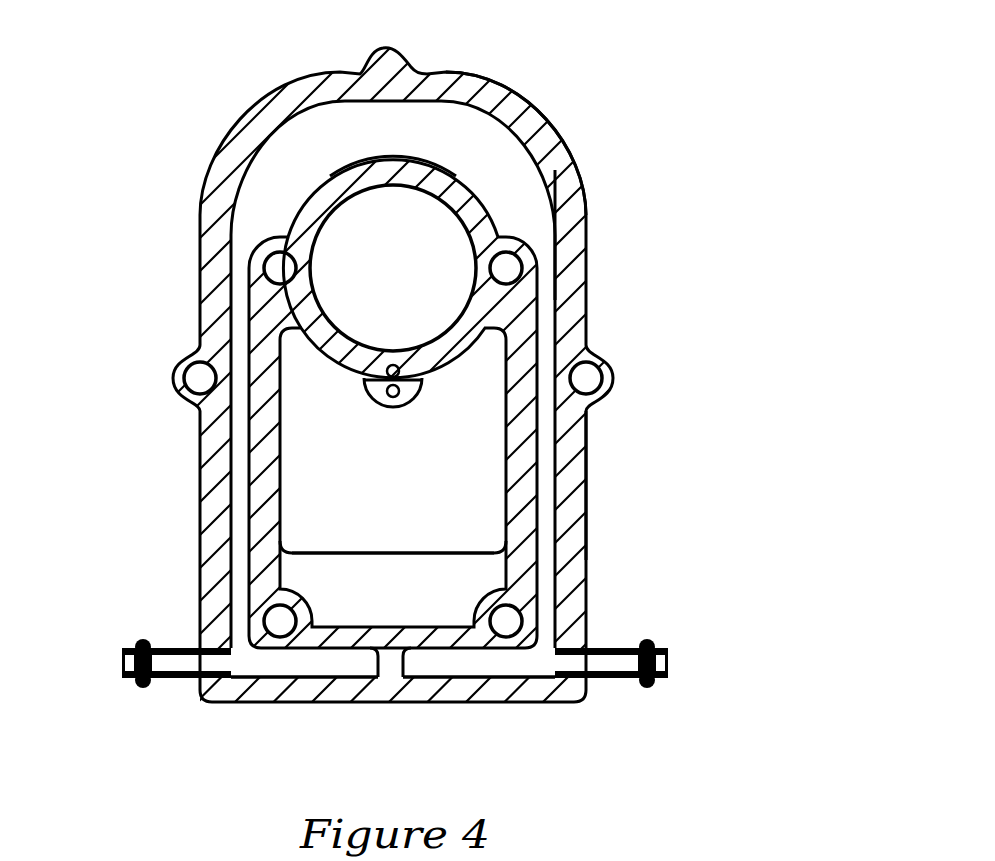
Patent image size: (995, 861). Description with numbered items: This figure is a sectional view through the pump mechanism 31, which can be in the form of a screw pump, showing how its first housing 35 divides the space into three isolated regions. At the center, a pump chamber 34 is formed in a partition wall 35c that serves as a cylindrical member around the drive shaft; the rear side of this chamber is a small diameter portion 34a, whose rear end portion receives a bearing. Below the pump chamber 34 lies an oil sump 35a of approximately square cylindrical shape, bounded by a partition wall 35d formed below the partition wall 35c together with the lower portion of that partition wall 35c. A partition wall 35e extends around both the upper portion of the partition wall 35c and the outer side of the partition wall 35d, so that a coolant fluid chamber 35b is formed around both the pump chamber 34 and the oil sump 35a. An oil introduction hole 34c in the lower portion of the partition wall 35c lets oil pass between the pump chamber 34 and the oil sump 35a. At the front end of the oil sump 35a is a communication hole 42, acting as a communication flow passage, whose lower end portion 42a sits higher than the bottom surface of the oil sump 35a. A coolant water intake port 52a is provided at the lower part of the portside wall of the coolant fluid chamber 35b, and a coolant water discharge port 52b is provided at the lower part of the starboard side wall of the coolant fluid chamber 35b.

The pump mechanism 31 is at (497, 430).
The pump chamber 34 is at (330, 320).
The small diameter portion 34a is at (308, 230).
The oil introduction hole 34c is at (418, 381).
The first housing 35 is at (270, 99).
The oil sump 35a is at (507, 578).
The coolant fluid chamber 35b is at (556, 181).
The partition wall 35c is at (392, 153).
The partition wall 35d is at (535, 453).
The partition wall 35e is at (556, 132).
The communication hole 42 is at (507, 517).
The lower end portion 42a is at (405, 550).
The coolant water intake port 52a is at (152, 666).
The coolant water discharge port 52b is at (638, 662).